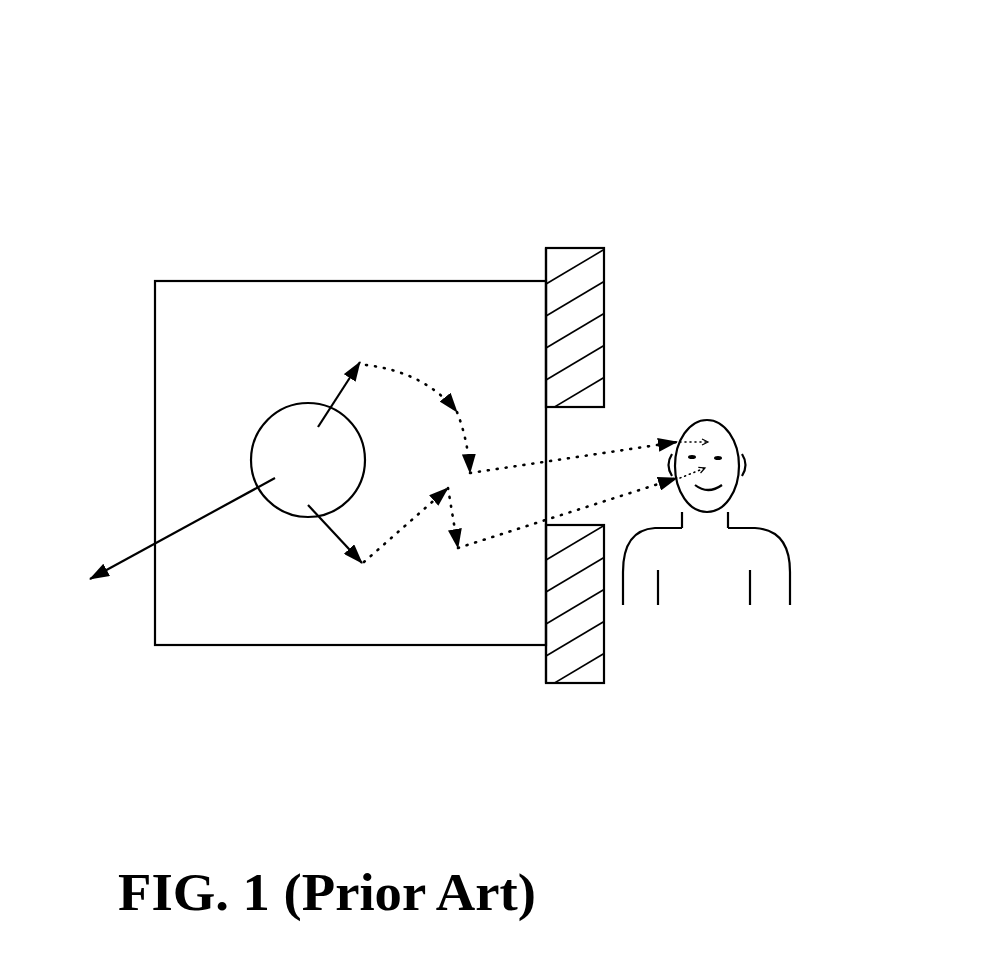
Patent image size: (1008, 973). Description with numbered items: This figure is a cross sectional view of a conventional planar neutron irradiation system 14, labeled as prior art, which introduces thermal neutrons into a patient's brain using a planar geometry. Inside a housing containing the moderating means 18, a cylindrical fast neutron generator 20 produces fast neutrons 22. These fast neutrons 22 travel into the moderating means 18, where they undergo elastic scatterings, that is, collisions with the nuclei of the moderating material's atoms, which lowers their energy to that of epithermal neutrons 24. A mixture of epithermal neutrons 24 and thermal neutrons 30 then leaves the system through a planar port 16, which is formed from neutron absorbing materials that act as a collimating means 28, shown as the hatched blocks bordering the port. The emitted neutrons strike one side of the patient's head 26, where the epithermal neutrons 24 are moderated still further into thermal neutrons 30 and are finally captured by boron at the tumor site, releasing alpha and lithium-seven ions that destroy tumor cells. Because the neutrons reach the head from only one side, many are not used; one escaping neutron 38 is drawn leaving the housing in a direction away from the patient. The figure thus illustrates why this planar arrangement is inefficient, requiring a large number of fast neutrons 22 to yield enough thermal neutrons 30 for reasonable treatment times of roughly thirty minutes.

The planar neutron irradiation system 14 is at (361, 110).
The planar port 16 is at (600, 425).
The moderating means 18 is at (397, 592).
The cylindrical fast neutron generator 20 is at (293, 445).
The fast neutrons 22 is at (320, 369).
The epithermal neutrons 24 is at (837, 293).
The patient's head 26 is at (727, 420).
The collimating means 28 is at (588, 310).
The thermal neutrons 30 is at (697, 440).
The escaping neutron 38 is at (140, 548).